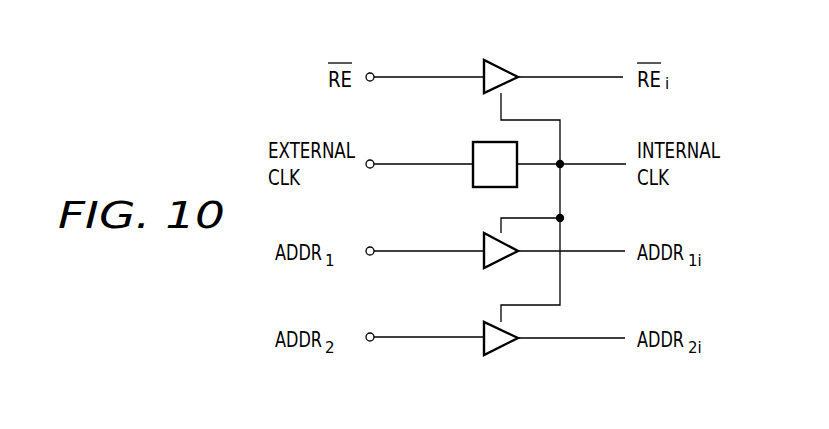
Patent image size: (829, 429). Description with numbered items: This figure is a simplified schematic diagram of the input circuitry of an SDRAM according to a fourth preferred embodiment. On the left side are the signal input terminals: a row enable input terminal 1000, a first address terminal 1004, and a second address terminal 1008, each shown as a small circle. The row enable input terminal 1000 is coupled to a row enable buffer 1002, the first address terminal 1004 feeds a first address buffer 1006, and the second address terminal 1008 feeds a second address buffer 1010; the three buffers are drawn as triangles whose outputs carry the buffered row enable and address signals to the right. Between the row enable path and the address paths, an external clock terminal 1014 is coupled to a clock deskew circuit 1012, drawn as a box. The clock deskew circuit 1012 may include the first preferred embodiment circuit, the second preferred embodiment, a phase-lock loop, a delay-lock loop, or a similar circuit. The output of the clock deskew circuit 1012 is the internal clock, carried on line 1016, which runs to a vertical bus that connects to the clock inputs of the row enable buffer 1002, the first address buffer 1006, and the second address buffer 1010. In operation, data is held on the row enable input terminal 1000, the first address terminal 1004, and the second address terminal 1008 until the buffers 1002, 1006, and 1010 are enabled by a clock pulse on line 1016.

The row enable input terminal 1000 is at (366, 71).
The row enable buffer 1002 is at (513, 45).
The external clock terminal 1014 is at (367, 158).
The clock deskew circuit 1012 is at (473, 175).
The line 1016 is at (603, 160).
The first address terminal 1004 is at (367, 257).
The first address buffer 1006 is at (484, 265).
The second address terminal 1008 is at (367, 343).
The second address buffer 1010 is at (484, 350).